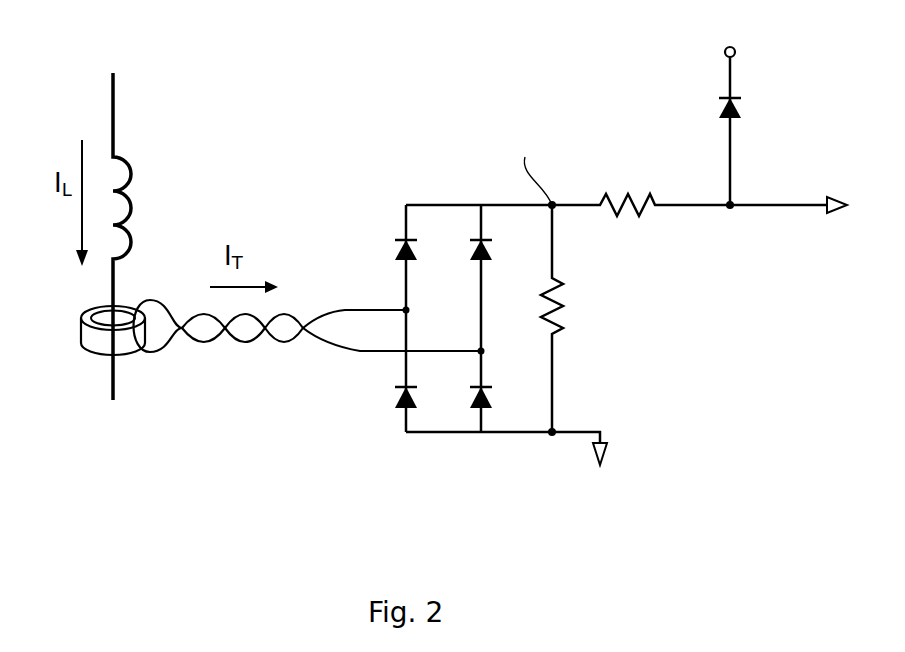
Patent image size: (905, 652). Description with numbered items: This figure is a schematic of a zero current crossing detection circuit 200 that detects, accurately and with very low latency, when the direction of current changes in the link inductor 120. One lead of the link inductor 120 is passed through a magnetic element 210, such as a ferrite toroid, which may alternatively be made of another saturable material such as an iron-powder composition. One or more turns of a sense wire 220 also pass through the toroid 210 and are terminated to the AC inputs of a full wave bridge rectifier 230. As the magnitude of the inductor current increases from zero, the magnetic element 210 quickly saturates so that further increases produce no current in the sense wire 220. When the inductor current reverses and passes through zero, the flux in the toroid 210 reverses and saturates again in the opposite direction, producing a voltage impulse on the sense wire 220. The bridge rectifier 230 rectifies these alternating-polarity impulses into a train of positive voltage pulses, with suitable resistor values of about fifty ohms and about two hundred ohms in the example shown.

The link inductor 120 is at (133, 200).
The zero current crossing detection circuit 200 is at (616, 272).
The magnetic element 210 is at (82, 333).
The sense wire 220 is at (255, 352).
The full wave bridge rectifier 230 is at (453, 433).